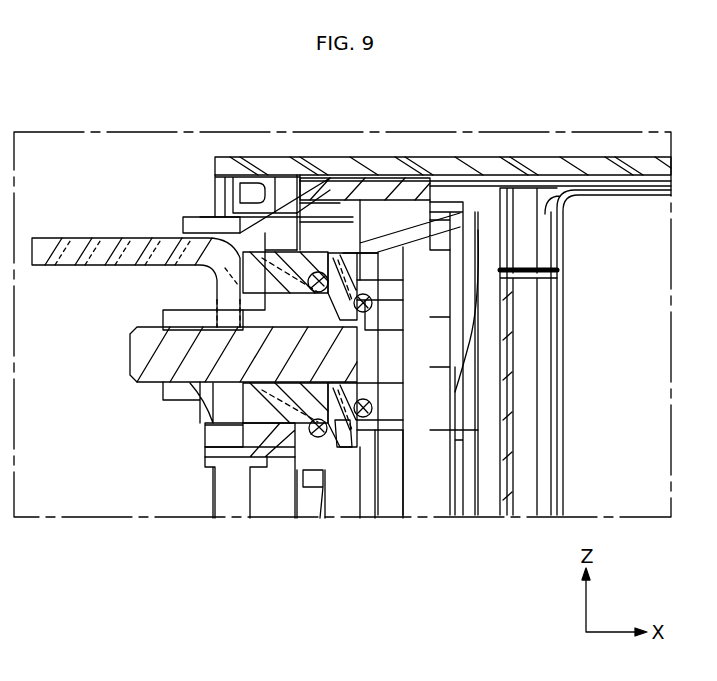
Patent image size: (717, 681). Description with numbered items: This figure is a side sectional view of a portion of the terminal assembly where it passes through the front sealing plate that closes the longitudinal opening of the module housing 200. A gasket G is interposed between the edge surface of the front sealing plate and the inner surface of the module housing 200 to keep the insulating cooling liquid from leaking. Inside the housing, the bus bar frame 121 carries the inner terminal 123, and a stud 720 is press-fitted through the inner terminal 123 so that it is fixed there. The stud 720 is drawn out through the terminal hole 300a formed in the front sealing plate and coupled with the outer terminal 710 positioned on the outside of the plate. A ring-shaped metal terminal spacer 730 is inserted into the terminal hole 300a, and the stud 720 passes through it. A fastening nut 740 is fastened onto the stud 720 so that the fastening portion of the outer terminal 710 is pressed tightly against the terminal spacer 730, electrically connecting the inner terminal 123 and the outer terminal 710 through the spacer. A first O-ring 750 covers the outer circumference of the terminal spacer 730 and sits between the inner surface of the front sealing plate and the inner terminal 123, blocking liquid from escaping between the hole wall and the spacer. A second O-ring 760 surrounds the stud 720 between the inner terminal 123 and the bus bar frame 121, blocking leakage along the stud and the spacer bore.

The module housing 200 is at (590, 165).
The bus bar frame 121 is at (421, 222).
The gasket G is at (263, 183).
The outer terminal 710 is at (78, 238).
The terminal hole 300a is at (243, 283).
The fastening nut 740 is at (175, 319).
The stud 720 is at (130, 352).
The terminal spacer 730 is at (213, 415).
The second O-ring 760 is at (233, 445).
The first O-ring 750 is at (240, 470).
The inner terminal 123 is at (343, 447).